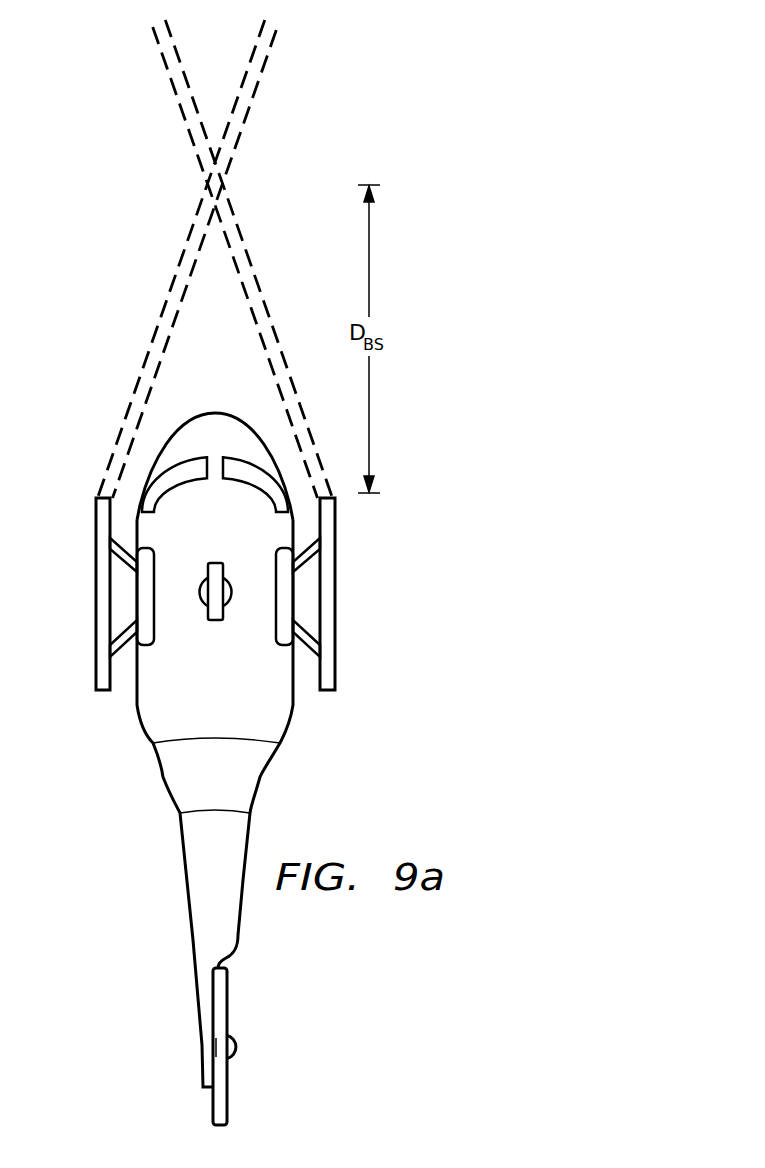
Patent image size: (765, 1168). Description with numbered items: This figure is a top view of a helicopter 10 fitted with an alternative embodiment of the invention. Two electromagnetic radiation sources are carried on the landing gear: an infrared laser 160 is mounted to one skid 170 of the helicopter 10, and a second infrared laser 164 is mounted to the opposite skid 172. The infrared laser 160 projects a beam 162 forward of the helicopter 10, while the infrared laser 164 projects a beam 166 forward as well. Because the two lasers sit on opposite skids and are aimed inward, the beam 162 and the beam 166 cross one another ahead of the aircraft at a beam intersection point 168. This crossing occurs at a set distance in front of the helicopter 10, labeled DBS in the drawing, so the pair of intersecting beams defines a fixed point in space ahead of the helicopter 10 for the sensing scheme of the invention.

The helicopter 10 is at (163, 777).
The infrared laser 160 is at (334, 502).
The beam 162 is at (258, 284).
The infrared laser 164 is at (96, 500).
The beam 166 is at (155, 330).
The beam intersection point 168 is at (223, 186).
The skid 170 is at (334, 612).
The skid 172 is at (96, 612).